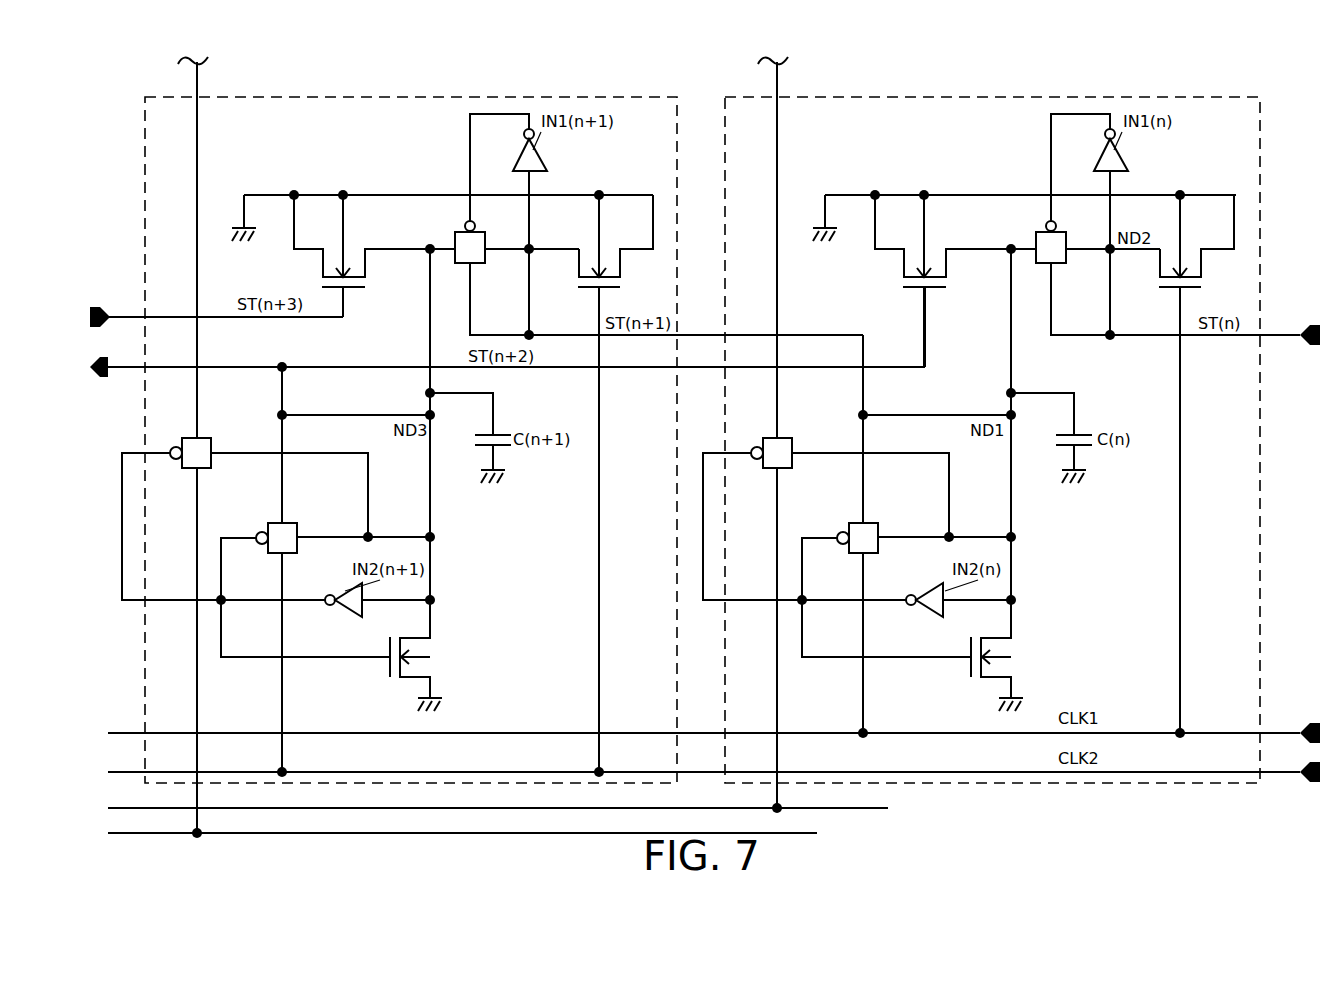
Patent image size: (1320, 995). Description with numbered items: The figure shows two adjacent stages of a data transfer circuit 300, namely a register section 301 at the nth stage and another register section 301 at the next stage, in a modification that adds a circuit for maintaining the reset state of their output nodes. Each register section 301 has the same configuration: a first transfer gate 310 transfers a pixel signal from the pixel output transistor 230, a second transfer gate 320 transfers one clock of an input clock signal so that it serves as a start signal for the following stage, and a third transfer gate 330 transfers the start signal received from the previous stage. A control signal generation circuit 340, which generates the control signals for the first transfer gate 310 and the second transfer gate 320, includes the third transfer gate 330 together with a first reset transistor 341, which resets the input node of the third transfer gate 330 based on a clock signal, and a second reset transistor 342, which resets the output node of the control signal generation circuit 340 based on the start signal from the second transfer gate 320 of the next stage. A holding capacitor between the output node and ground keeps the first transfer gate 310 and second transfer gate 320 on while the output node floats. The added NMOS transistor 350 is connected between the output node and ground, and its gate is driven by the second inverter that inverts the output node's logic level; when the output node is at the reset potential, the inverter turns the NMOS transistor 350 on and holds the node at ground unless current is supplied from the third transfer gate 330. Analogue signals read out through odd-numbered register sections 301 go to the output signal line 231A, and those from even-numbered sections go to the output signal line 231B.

The pixel output transistor 230 is at (486, 436).
The output signal line 231A is at (888, 808).
The output signal line 231B is at (817, 833).
The data transfer circuit 300 is at (1142, 82).
The register section 301 is at (455, 66).
The control signal generation circuit 340 is at (639, 116).
The second reset transistor 342 is at (333, 246).
The third transfer gate 330 is at (463, 224).
The first reset transistor 341 is at (608, 247).
The first transfer gate 310 is at (215, 468).
The second transfer gate 320 is at (288, 520).
The NMOS transistor 350 is at (432, 648).